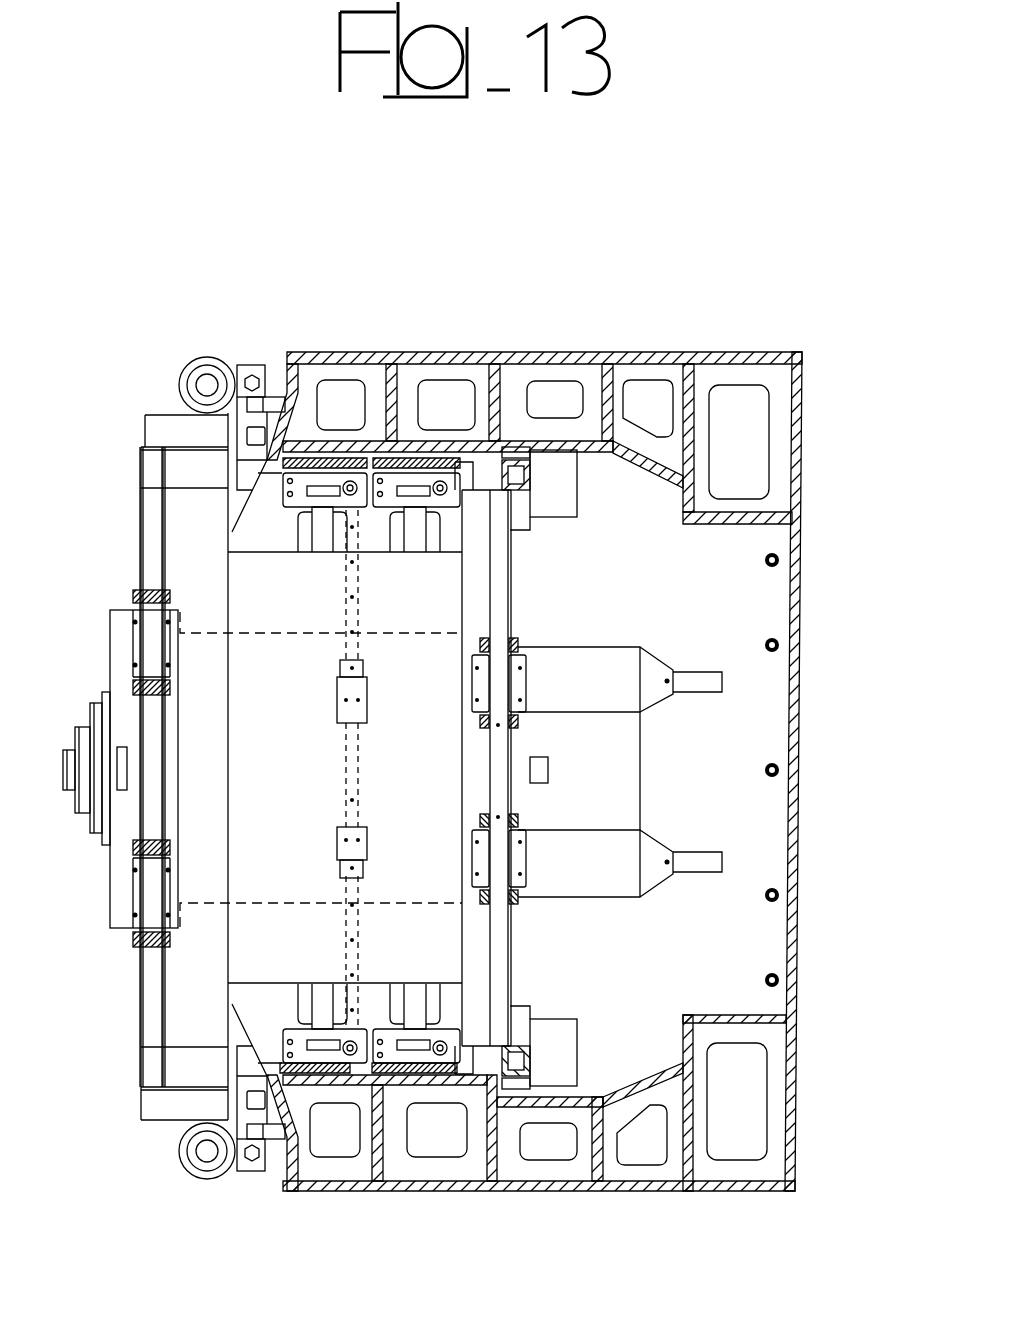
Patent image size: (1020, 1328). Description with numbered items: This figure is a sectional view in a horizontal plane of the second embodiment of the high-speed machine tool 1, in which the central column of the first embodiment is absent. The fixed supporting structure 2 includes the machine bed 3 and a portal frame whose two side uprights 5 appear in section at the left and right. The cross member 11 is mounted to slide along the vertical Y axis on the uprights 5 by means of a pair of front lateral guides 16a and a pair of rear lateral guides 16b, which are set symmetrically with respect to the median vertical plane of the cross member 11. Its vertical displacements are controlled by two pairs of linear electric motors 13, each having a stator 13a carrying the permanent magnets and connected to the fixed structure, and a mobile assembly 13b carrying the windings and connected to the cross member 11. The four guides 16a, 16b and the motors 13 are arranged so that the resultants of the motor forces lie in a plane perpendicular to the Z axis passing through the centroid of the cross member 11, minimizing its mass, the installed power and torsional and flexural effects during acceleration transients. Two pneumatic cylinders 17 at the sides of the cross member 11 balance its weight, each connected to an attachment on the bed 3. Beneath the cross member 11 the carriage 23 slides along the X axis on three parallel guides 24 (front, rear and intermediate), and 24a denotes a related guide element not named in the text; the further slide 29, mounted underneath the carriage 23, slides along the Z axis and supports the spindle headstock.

The high-speed machine tool 1 is at (787, 293).
The fixed supporting structure 2 is at (805, 417).
The machine bed 3 is at (776, 717).
The side uprights 5 is at (558, 386).
The cross member 11 is at (455, 526).
The linear electric motors 13 is at (332, 440).
The stator 13a is at (397, 455).
The mobile assembly 13b is at (412, 517).
The front lateral guides 16a is at (256, 428).
The rear lateral guides 16b is at (532, 474).
The pneumatic cylinders 17 is at (205, 380).
The carriage 23 is at (106, 933).
The parallel guides 24 is at (500, 958).
The carriage 24a is at (500, 678).
The slide 29 is at (610, 768).